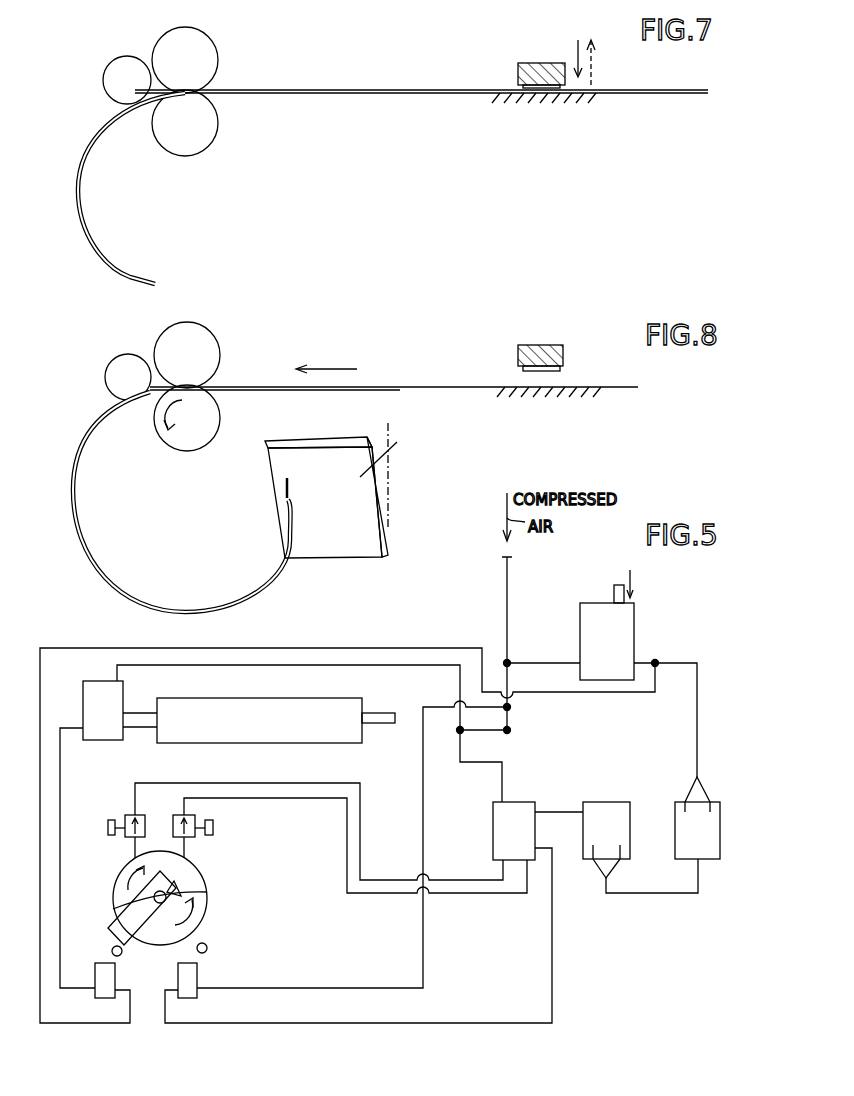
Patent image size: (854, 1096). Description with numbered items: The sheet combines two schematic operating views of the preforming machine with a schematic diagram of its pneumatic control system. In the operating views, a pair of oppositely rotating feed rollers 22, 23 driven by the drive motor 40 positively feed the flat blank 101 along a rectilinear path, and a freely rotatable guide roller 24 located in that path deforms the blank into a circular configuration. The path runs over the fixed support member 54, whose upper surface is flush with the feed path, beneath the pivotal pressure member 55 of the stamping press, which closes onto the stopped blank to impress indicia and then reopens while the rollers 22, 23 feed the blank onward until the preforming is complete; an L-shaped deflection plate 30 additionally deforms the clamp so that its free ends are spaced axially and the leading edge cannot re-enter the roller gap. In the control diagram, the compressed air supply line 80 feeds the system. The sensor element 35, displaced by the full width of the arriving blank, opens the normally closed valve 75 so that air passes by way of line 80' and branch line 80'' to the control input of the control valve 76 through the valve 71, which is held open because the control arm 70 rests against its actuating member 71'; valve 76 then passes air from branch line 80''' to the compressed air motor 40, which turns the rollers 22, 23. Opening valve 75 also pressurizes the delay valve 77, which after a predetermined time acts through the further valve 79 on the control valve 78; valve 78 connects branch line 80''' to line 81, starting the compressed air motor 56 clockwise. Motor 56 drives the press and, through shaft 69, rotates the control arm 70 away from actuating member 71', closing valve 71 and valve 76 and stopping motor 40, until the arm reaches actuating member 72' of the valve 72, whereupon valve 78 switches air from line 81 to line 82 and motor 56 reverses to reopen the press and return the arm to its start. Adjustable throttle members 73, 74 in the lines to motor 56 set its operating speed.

In FIG. 7, the feed roller 22 is at (207, 60).
In FIG. 8, the feed roller 22 is at (203, 342).
In FIG. 7, the feed roller 23 is at (200, 143).
In FIG. 8, the feed roller 23 is at (167, 437).
In FIG. 7, the guide roller 24 is at (117, 70).
In FIG. 8, the guide roller 24 is at (112, 368).
In FIG. 7, the clamp 101 is at (332, 90).
In FIG. 8, the clamp 101 is at (368, 386).
In FIG. 7, the pressure member 55 is at (520, 78).
In FIG. 8, the pressure member 55 is at (520, 352).
In FIG. 7, the support member 54 is at (518, 100).
In FIG. 8, the support member 54 is at (520, 397).
In FIG. 8, the L-shaped deflection plate 30 is at (379, 493).
In FIG. 5, the compressed air supply line 80 is at (489, 611).
In FIG. 5, the line 80' is at (618, 703).
In FIG. 5, the branch line 80'' is at (347, 825).
In FIG. 5, the branch line 80''' is at (332, 806).
In FIG. 5, the sensor element 35 is at (613, 592).
In FIG. 5, the valve 75 is at (622, 635).
In FIG. 5, the control valve 76 is at (95, 705).
In FIG. 5, the drive motor 40 is at (320, 715).
In FIG. 5, the adjustable throttle member 73 is at (108, 823).
In FIG. 5, the adjustable throttle member 74 is at (212, 823).
In FIG. 5, the compressed air motor 56 is at (205, 887).
In FIG. 5, the control arm 70 is at (113, 906).
In FIG. 5, the shaft 69 is at (205, 893).
In FIG. 5, the actuating member 71' is at (97, 951).
In FIG. 5, the valve 71 is at (126, 979).
In FIG. 5, the actuating member 72' is at (227, 951).
In FIG. 5, the valve 72 is at (215, 980).
In FIG. 5, the line 81 is at (470, 878).
In FIG. 5, the line 82 is at (495, 895).
In FIG. 5, the control valve 78 is at (518, 800).
In FIG. 5, the further valve 79 is at (612, 800).
In FIG. 5, the delay valve 77 is at (675, 808).